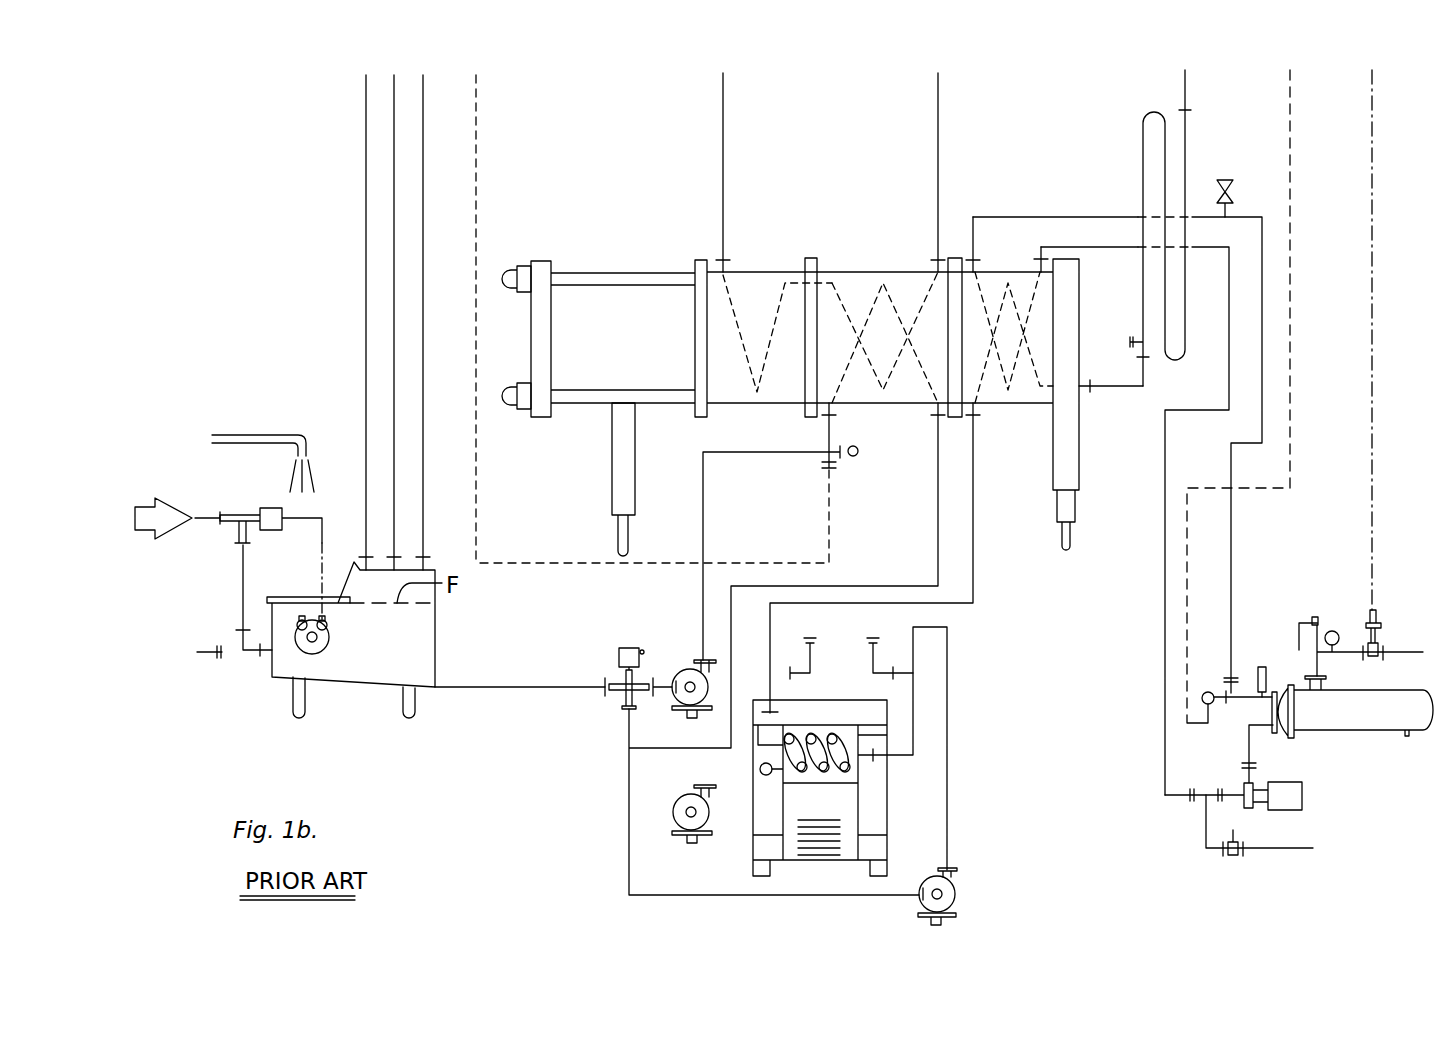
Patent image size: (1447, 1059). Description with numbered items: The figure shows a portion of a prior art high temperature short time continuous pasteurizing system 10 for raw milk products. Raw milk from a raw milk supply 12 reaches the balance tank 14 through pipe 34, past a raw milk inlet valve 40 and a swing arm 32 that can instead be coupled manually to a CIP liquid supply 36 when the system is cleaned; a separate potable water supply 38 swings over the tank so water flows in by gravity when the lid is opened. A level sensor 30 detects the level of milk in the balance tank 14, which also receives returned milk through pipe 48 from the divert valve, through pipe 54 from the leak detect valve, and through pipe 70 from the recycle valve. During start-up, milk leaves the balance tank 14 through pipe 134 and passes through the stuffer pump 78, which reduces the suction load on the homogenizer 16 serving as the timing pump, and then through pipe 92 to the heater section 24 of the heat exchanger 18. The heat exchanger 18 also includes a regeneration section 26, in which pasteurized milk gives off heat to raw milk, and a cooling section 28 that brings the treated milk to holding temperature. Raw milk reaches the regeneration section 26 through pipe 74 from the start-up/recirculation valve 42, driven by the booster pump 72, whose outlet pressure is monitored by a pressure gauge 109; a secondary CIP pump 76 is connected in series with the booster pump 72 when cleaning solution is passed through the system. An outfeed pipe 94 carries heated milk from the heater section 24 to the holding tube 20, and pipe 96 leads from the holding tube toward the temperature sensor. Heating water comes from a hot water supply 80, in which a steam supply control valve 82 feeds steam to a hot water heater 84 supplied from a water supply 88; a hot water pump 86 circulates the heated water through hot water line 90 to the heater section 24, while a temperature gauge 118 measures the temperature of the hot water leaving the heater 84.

The pasteurizing system 10 is at (545, 777).
The raw milk supply 12 is at (173, 500).
The balance tank 14 is at (370, 686).
The homogenizer 16 is at (820, 700).
The heat exchanger 18 is at (811, 260).
The holding tube 20 is at (1143, 153).
The heater section 24 is at (990, 405).
The regeneration section 26 is at (870, 405).
The cooling section 28 is at (766, 405).
The level sensor 30 is at (330, 640).
The swing arm 32 is at (243, 638).
The pipe 34 is at (243, 568).
The CIP liquid supply 36 is at (208, 655).
The potable water supply 38 is at (265, 437).
The raw milk inlet valve 40 is at (258, 508).
The start-up/recirculation valve 42 is at (612, 690).
The pipe 48 is at (423, 213).
The pipe 54 is at (394, 200).
The pipe 70 is at (366, 152).
The booster pump 72 is at (683, 670).
The pipe 74 is at (703, 522).
The secondary CIP pump 76 is at (700, 843).
The stuffer pump 78 is at (956, 894).
The hot water supply 80 is at (1258, 634).
The steam supply control valve 82 is at (1385, 637).
The hot water heater 84 is at (1383, 725).
The hot water pump 86 is at (1303, 797).
The water supply 88 is at (1313, 850).
The hot water line 90 is at (1233, 532).
The pipe 92 is at (975, 572).
The outfeed pipe 94 is at (1108, 388).
The pipe 96 is at (1187, 106).
The pressure gauge 109 is at (853, 458).
The temperature gauge 118 is at (1205, 698).
The pipe 134 is at (645, 895).